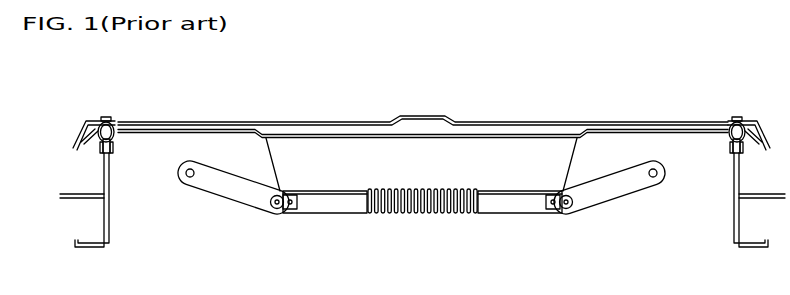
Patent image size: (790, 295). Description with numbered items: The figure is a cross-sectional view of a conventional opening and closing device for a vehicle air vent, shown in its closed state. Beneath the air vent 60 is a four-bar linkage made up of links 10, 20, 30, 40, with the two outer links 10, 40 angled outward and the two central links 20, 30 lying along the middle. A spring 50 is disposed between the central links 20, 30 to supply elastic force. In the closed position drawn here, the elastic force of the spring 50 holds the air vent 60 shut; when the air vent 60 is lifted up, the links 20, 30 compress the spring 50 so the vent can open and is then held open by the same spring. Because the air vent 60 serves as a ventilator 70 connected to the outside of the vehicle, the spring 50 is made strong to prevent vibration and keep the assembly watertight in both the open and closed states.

The link 10 is at (223, 205).
The link 20 is at (332, 205).
The link 30 is at (517, 213).
The link 40 is at (618, 203).
The spring 50 is at (417, 215).
The air vent 60 is at (285, 128).
The ventilator 70 is at (103, 171).